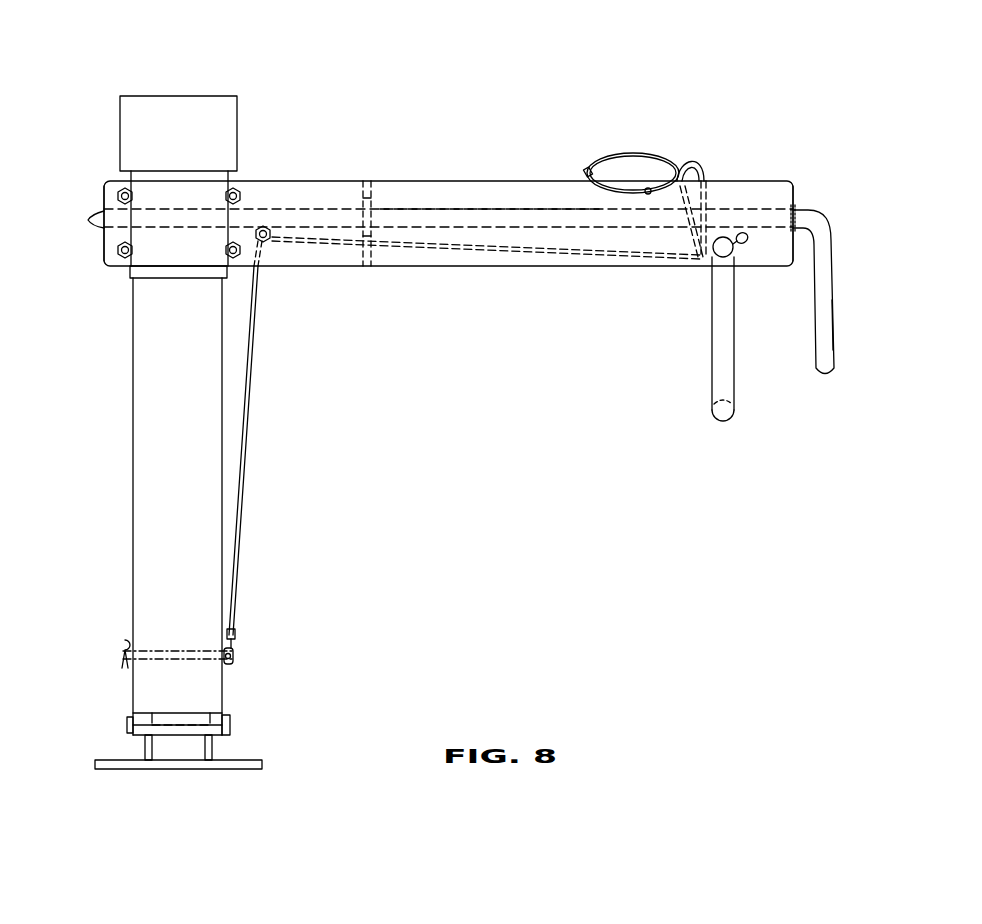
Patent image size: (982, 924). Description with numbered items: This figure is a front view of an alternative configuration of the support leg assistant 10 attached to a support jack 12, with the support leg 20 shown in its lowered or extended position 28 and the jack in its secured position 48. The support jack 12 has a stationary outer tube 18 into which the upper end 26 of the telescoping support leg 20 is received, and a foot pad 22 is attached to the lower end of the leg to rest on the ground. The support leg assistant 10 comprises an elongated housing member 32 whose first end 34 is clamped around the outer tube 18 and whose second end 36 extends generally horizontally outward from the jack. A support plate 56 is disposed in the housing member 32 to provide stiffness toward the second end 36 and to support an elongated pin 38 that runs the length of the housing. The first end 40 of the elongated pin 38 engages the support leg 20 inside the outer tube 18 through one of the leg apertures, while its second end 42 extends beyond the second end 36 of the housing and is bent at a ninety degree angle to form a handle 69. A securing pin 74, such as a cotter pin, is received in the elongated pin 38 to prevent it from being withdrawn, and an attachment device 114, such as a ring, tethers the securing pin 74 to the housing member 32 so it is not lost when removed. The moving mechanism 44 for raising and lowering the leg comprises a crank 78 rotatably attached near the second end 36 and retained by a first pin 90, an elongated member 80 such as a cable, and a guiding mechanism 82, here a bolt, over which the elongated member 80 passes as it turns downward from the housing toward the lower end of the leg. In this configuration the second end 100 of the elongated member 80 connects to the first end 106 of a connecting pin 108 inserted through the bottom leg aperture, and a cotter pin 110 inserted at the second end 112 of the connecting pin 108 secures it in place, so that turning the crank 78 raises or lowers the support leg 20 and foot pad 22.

The support leg assistant 10 is at (491, 67).
The support jack 12 is at (239, 127).
The outer tube 18 is at (133, 271).
The support leg 20 is at (160, 479).
The foot pad 22 is at (243, 767).
The upper end 26 is at (128, 293).
The extended position 28 is at (309, 427).
The housing member 32 is at (430, 181).
The first end 34 is at (106, 179).
The second end 36 is at (787, 180).
The elongated pin 38 is at (490, 216).
The first end 40 is at (92, 230).
The second end 42 is at (811, 211).
The moving mechanism 44 is at (696, 286).
The secured position 48 is at (245, 170).
The support plate 56 is at (370, 190).
The handle 69 is at (825, 287).
The securing pin 74 is at (699, 168).
The crank 78 is at (720, 372).
The elongated member 80 is at (247, 375).
The guiding mechanism 82 is at (270, 243).
The first pin 90 is at (746, 243).
The second end 100 is at (238, 634).
The first end 106 is at (241, 653).
The connecting pin 108 is at (185, 655).
The cotter pin 110 is at (122, 645).
The second end 112 is at (116, 661).
The attachment device 114 is at (647, 152).